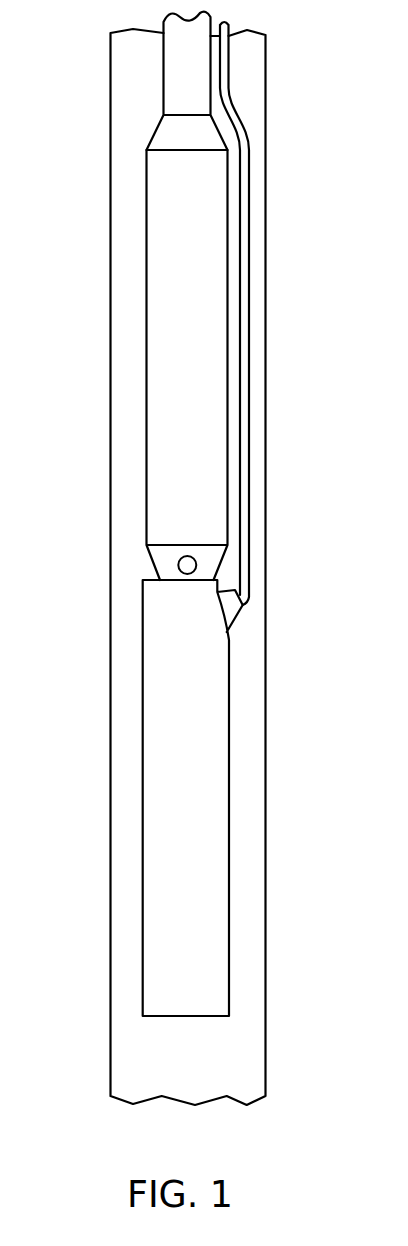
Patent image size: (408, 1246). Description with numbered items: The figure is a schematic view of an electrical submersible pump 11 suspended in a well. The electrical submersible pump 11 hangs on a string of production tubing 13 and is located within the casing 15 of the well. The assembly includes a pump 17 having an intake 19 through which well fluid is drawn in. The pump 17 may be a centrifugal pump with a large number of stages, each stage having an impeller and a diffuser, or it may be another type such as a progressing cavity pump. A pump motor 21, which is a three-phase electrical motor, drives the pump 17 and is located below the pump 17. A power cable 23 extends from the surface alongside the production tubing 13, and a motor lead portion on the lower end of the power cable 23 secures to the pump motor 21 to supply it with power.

The electrical submersible pump 11 is at (145, 514).
The production tubing 13 is at (174, 83).
The casing 15 is at (113, 460).
The pump 17 is at (157, 254).
The intake 19 is at (178, 565).
The pump motor 21 is at (157, 704).
The power cable 23 is at (252, 463).